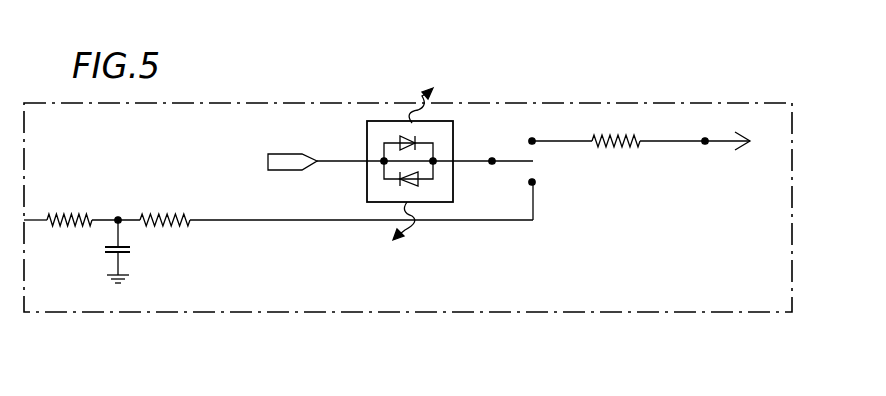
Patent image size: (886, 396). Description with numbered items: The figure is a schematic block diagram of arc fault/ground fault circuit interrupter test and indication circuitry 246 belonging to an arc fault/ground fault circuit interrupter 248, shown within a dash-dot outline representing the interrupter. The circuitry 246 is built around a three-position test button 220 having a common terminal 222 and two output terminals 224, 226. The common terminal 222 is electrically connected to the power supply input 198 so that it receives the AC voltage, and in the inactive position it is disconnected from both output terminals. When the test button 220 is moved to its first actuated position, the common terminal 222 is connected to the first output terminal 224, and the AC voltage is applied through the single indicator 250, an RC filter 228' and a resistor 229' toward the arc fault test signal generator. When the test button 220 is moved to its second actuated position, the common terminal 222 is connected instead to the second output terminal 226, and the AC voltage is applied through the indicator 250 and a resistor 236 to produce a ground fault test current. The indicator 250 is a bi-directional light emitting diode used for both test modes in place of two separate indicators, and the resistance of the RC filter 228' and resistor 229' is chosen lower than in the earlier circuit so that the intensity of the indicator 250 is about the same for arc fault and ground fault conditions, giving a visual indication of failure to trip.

The power supply input 198 is at (268, 162).
The test button 220 is at (560, 232).
The common terminal 222 is at (289, 153).
The first output terminal 224 is at (535, 182).
The second output terminal 226 is at (532, 141).
The RC filter 228' is at (141, 211).
The resistor 229' is at (65, 191).
The resistor 236 is at (612, 147).
The arc fault/ground fault circuit interrupter test and indication circuitry 246 is at (706, 103).
The arc fault/ground fault circuit interrupter 248 is at (432, 354).
The indicator 250 is at (378, 121).